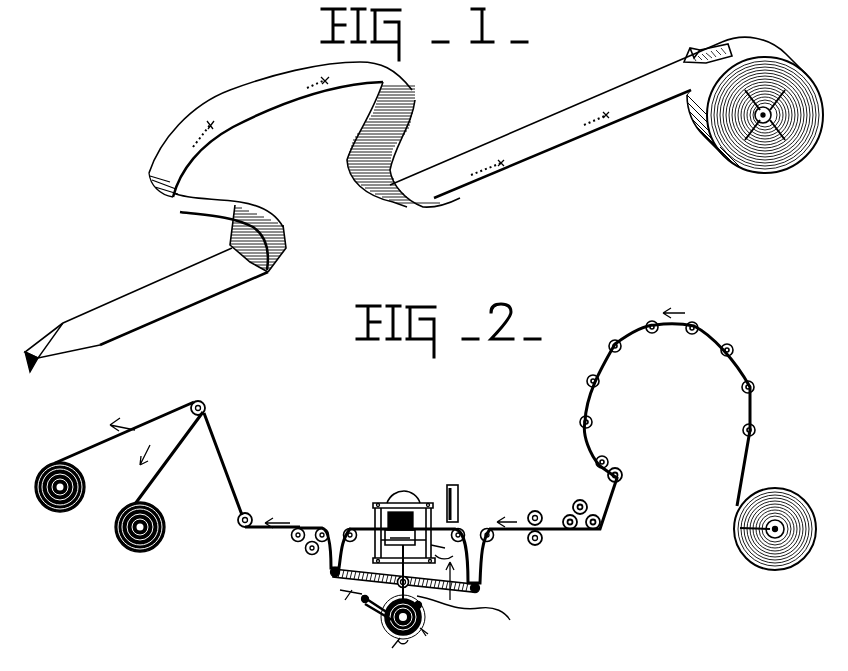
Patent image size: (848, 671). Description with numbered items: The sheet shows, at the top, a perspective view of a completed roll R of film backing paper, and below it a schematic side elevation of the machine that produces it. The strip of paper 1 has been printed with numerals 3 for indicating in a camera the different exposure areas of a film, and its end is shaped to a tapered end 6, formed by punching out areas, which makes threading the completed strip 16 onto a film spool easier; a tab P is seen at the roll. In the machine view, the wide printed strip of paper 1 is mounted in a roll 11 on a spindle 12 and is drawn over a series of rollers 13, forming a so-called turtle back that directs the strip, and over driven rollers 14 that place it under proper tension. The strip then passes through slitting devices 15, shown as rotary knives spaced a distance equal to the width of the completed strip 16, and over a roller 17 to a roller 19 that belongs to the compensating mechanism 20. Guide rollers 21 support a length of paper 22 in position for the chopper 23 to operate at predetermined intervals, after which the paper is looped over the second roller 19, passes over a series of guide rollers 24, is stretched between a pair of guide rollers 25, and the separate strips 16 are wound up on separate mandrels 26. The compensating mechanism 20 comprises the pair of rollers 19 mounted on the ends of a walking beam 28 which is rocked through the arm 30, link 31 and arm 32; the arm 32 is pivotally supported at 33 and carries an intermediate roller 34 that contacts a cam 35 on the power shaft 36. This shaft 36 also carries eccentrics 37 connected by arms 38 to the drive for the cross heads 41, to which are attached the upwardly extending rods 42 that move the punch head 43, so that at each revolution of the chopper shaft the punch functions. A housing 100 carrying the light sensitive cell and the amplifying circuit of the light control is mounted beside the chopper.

In FIG. 2, the strip of paper 1 is at (708, 331).
In FIG. 1, the numerals 3 is at (216, 133).
In FIG. 1, the tapered ends 6 is at (44, 345).
In FIG. 1, the tab P is at (714, 58).
In FIG. 1, the roll of tape R is at (780, 150).
In FIG. 2, the roll 11 is at (784, 500).
In FIG. 2, the spindle 12 is at (740, 528).
In FIG. 2, the rollers 13 is at (606, 460).
In FIG. 2, the driven rollers 14 is at (580, 500).
In FIG. 2, the slitting devices 15 is at (534, 511).
In FIG. 1, the completed strip 16 is at (283, 87).
In FIG. 2, the completed strip 16 is at (78, 473).
In FIG. 2, the roller 17 is at (490, 541).
In FIG. 2, the rollers 19 is at (330, 572).
In FIG. 2, the compensating mechanism 20 is at (420, 608).
In FIG. 2, the guide rollers 21 is at (350, 529).
In FIG. 2, the length of paper 22 is at (385, 546).
In FIG. 2, the chopper 23 is at (416, 503).
In FIG. 2, the guide rollers 24 is at (312, 530).
In FIG. 2, the guide rollers 25 is at (208, 398).
In FIG. 2, the mandrels 26 is at (65, 501).
In FIG. 2, the walking beam 28 is at (345, 580).
In FIG. 2, the arm 30 is at (360, 593).
In FIG. 2, the link 31 is at (375, 612).
In FIG. 2, the arm 32 is at (398, 630).
In FIG. 2, the pivot 33 is at (490, 625).
In FIG. 2, the roller 34 is at (426, 630).
In FIG. 2, the cam 35 is at (395, 650).
In FIG. 2, the power shaft 36 is at (404, 636).
In FIG. 2, the eccentrics 37 is at (425, 635).
In FIG. 2, the arms 38 is at (440, 545).
In FIG. 2, the cross heads 41 is at (460, 603).
In FIG. 2, the rods 42 is at (420, 550).
In FIG. 2, the punch head 43 is at (400, 497).
In FIG. 2, the housing 100 is at (458, 497).